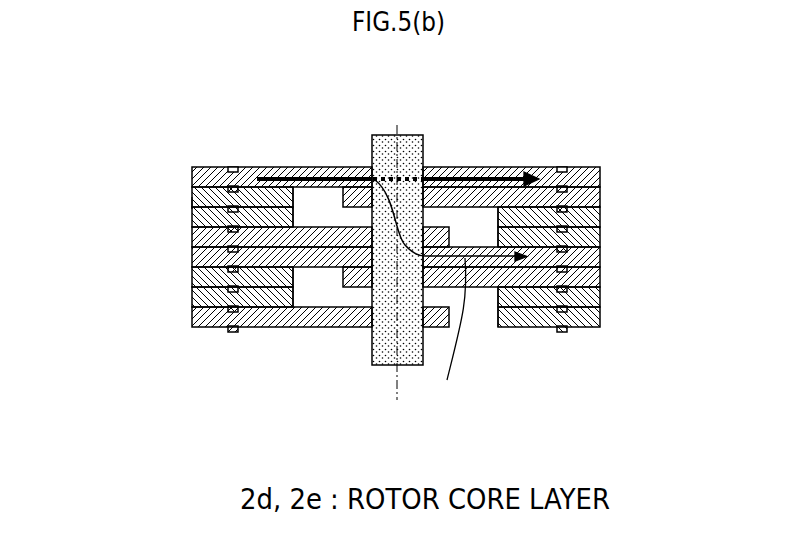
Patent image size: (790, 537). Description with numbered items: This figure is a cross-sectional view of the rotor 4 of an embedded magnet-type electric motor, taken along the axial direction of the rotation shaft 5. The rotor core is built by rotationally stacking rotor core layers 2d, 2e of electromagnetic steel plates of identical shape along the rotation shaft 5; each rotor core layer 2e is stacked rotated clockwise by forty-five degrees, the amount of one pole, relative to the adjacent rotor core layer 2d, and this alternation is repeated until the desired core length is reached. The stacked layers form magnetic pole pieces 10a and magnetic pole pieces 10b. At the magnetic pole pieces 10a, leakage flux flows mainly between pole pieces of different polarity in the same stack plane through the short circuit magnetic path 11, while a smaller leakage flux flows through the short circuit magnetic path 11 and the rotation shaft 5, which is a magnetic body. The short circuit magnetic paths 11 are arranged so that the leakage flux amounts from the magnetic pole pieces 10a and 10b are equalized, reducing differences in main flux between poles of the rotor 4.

The rotor 4 is at (371, 193).
The rotation shaft 5 is at (383, 135).
The rotor core layer 2d is at (603, 170).
The rotor core layer 2e is at (602, 195).
The magnetic pole piece 10a is at (210, 167).
The magnetic pole piece 10b is at (190, 203).
The short circuit magnetic path 11 is at (310, 167).